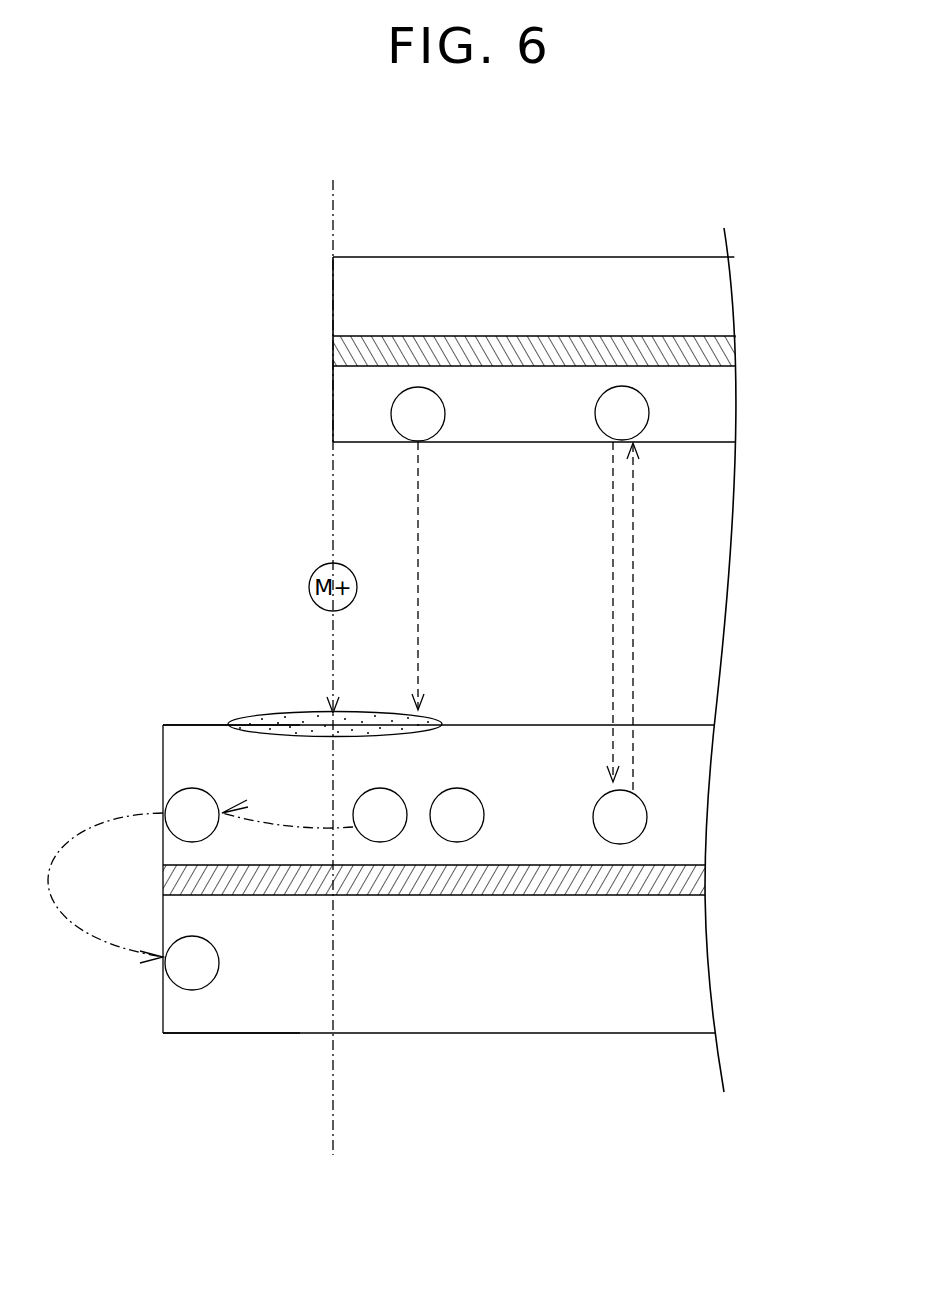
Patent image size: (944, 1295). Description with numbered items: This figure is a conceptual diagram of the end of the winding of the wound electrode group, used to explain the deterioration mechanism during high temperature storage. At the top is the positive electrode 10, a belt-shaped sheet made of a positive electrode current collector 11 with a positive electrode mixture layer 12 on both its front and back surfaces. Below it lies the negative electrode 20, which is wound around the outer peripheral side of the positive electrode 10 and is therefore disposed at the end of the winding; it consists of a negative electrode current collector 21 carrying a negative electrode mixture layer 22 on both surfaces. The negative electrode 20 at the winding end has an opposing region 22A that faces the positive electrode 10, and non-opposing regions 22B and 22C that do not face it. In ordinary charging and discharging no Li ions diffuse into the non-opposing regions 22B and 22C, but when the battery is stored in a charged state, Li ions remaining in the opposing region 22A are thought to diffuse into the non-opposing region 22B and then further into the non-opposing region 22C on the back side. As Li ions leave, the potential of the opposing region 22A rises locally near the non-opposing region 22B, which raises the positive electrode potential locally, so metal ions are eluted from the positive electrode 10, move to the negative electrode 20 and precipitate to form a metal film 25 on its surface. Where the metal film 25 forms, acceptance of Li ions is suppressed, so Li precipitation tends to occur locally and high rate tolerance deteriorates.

The positive electrode 10 is at (597, 351).
The positive electrode current collector 11 is at (724, 353).
The positive electrode mixture layer 12 is at (722, 277).
The negative electrode 20 is at (451, 946).
The negative electrode current collector 21 is at (707, 883).
The negative electrode mixture layer 22 is at (702, 783).
The opposing region 22A is at (540, 838).
The non-opposing region 22B is at (187, 768).
The non-opposing region 22C is at (185, 1003).
The metal film 25 is at (282, 722).